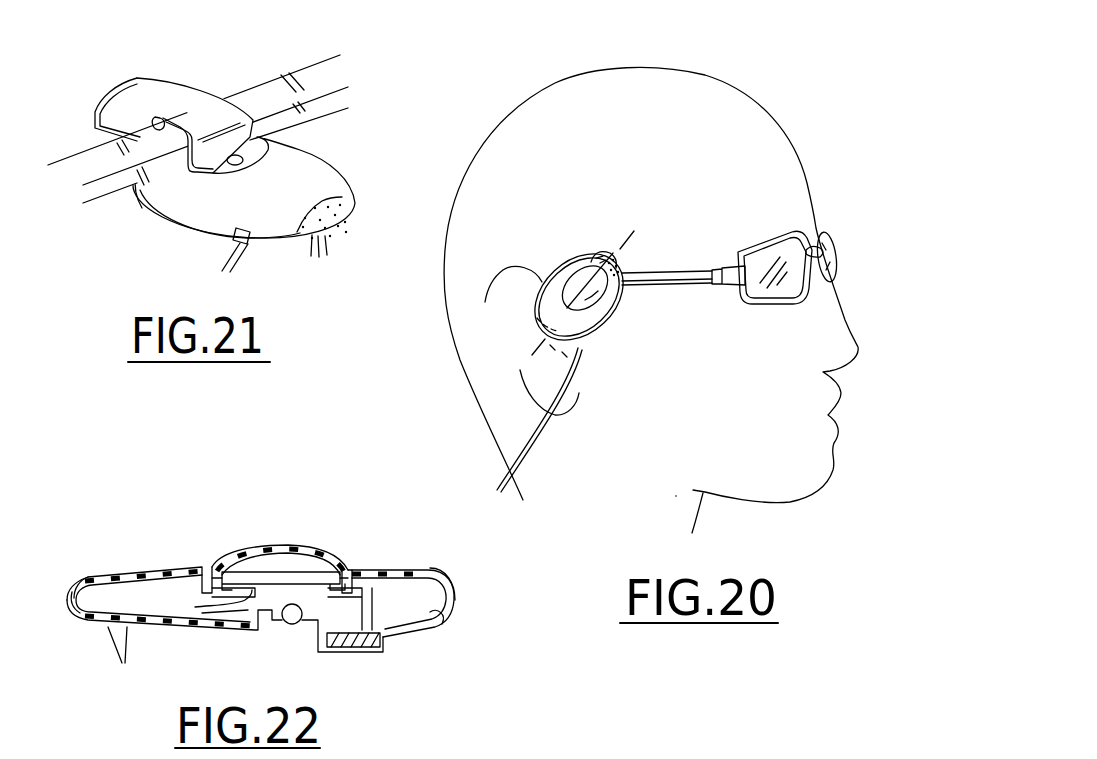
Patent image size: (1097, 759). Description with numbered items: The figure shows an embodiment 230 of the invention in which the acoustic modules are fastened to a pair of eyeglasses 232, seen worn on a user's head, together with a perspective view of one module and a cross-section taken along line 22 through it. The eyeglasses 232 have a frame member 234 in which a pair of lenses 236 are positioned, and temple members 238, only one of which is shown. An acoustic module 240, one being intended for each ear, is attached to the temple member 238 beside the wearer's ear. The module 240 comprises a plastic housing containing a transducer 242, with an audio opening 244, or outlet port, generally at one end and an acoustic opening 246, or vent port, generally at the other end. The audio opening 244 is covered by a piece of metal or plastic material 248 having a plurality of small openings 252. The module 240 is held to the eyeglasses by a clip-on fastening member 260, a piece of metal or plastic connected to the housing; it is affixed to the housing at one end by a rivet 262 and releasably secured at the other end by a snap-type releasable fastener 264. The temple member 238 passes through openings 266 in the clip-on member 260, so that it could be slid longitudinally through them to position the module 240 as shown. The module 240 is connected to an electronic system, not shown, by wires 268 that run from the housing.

In FIG. 20, the section line 22— 22 is at (510, 322).
In FIG. 20, the embodiment 230 is at (728, 376).
In FIG. 20, the eyeglasses 232 is at (731, 267).
In FIG. 20, the frame member 234 is at (781, 303).
In FIG. 20, the lenses 236 is at (818, 232).
In FIG. 20, the temple members 238 is at (688, 283).
In FIG. 21, the temple members 238 is at (310, 72).
In FIG. 20, the acoustic module 240 is at (593, 320).
In FIG. 21, the acoustic module 240 is at (200, 203).
In FIG. 22, the acoustic module 240 is at (152, 567).
In FIG. 22, the transducer 242 is at (280, 570).
In FIG. 20, the audio opening 244 is at (577, 365).
In FIG. 21, the audio opening 244 is at (350, 196).
In FIG. 22, the audio opening 244 is at (115, 626).
In FIG. 20, the acoustic opening 246 is at (602, 257).
In FIG. 22, the acoustic opening 246 is at (452, 590).
In FIG. 21, the cover piece 248 is at (355, 214).
In FIG. 22, the cover piece 248 is at (67, 597).
In FIG. 20, the small openings 252 is at (621, 263).
In FIG. 21, the small openings 252 is at (323, 262).
In FIG. 22, the small openings 252 is at (120, 660).
In FIG. 21, the clip-on fastening member 260 is at (137, 79).
In FIG. 22, the clip-on fastening member 260 is at (385, 643).
In FIG. 22, the rivet 262 is at (452, 622).
In FIG. 21, the releasable fastener 264 is at (241, 160).
In FIG. 22, the releasable fastener 264 is at (290, 627).
In FIG. 21, the openings 266 is at (158, 117).
In FIG. 22, the openings 266 is at (342, 653).
In FIG. 20, the wires 268 is at (530, 437).
In FIG. 21, the wires 268 is at (222, 250).
In FIG. 22, the wires 268 is at (218, 627).